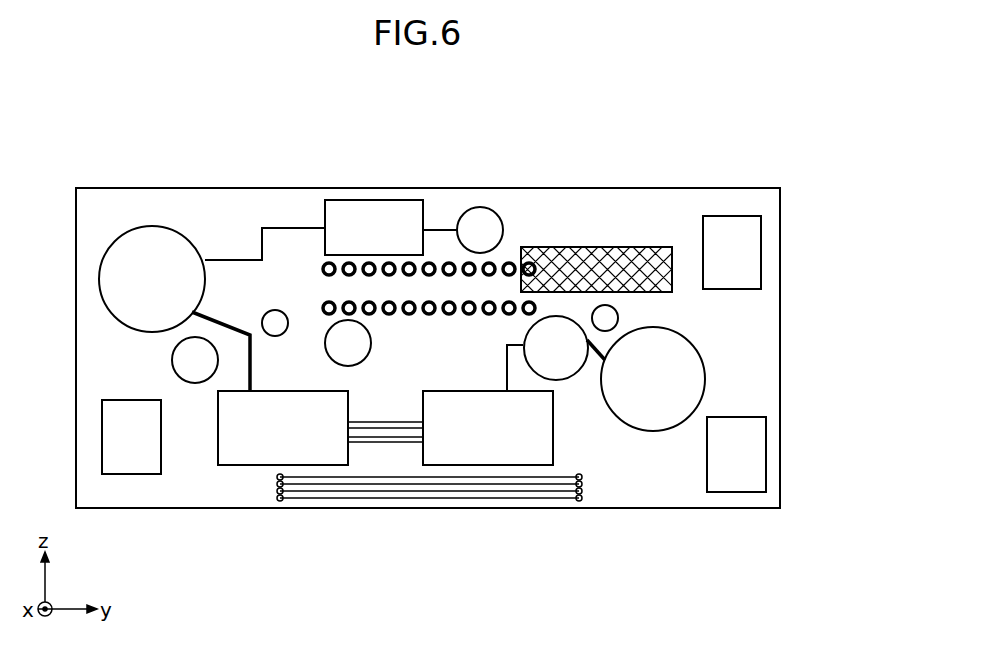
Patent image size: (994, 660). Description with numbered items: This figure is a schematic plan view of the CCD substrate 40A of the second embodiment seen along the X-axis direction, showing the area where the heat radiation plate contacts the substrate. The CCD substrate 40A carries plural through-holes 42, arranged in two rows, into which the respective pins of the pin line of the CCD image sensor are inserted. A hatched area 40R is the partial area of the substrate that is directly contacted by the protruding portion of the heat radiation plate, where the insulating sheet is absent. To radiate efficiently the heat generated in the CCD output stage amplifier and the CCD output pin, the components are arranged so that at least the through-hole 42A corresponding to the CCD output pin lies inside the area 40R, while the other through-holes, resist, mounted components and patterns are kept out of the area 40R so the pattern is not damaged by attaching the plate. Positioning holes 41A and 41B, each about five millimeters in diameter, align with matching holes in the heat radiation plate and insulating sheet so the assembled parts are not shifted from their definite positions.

The CCD substrate 40A is at (645, 503).
The area of the CCD substrate 40R is at (637, 250).
The through-holes 42 is at (309, 258).
The through-hole corresponding to the CCD output pin 42A is at (535, 260).
The positioning hole 41A is at (275, 337).
The positioning hole 41B is at (619, 316).